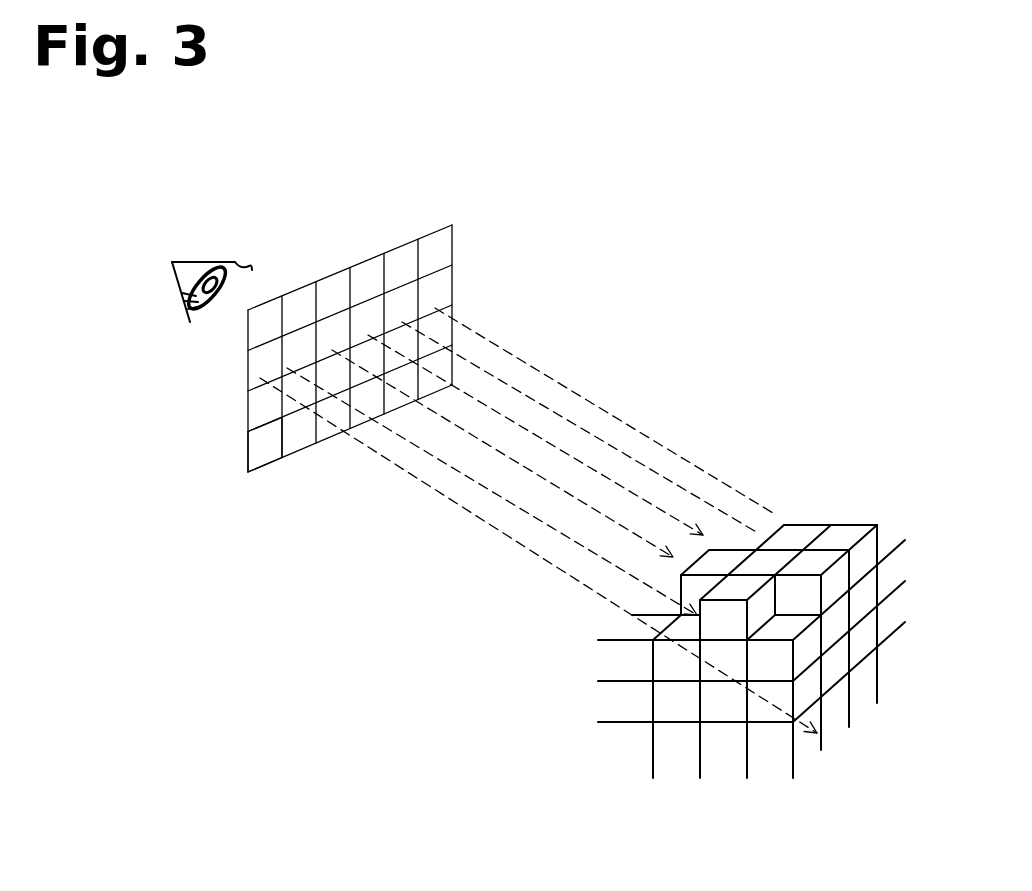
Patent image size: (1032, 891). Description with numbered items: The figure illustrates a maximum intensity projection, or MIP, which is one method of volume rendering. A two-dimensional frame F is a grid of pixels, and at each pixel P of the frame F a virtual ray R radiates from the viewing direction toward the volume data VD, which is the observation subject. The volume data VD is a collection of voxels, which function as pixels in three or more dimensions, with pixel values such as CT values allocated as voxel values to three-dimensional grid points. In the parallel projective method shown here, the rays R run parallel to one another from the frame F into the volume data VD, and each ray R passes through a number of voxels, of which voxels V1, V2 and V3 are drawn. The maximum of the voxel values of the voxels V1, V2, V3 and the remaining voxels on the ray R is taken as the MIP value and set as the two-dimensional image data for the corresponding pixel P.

The two-dimensional frame F is at (455, 239).
The pixel P is at (256, 447).
The ray R is at (440, 543).
The volume data VD is at (852, 498).
The voxel V1 is at (662, 661).
The voxel V2 is at (715, 673).
The voxel V3 is at (770, 716).